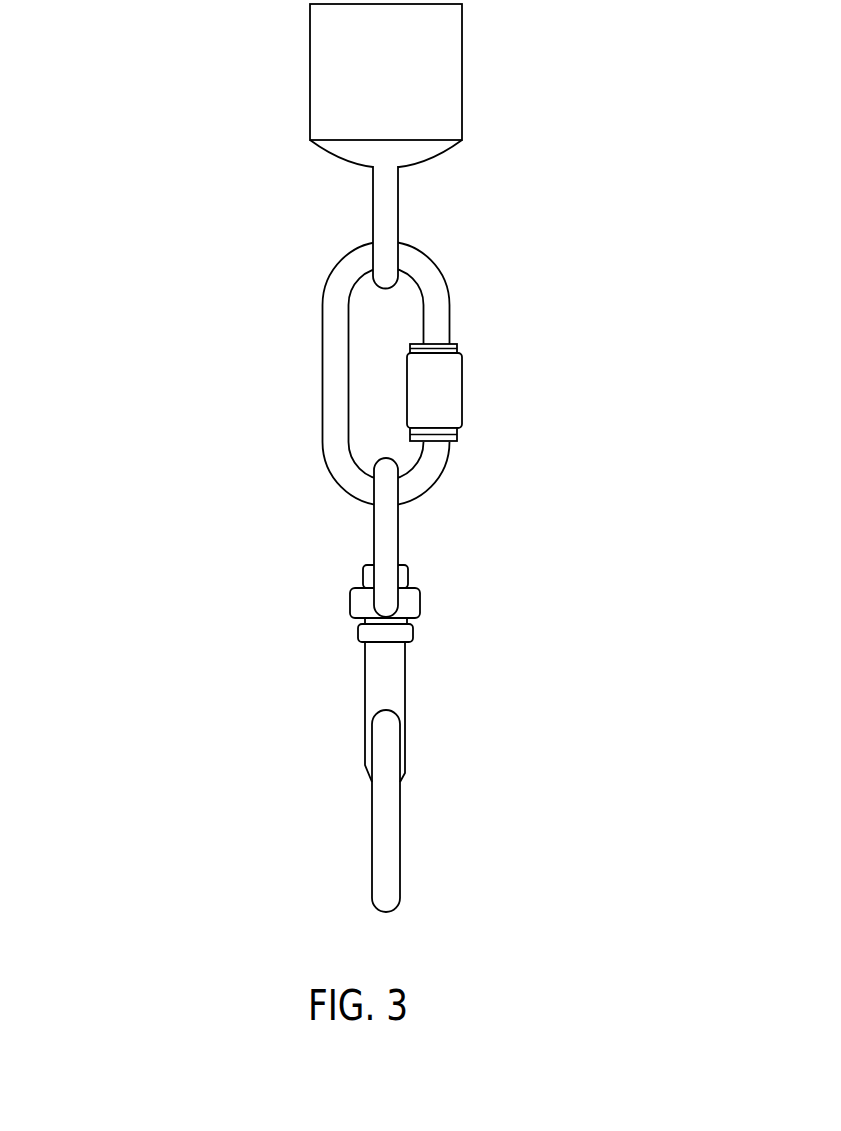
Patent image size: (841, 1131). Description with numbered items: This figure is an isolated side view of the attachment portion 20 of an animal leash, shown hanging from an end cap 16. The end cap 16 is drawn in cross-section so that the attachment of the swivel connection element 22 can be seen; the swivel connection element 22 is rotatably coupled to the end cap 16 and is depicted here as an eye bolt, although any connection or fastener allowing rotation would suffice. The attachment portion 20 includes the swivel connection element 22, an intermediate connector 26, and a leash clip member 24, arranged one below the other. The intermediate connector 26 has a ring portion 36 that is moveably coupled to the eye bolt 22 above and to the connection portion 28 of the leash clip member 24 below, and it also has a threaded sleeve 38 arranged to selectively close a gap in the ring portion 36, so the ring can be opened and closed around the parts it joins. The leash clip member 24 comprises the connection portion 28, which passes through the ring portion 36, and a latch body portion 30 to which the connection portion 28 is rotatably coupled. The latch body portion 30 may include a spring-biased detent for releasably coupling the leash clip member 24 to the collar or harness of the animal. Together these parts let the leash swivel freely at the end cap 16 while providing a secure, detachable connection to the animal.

The end cap 16 is at (445, 79).
The attachment portion 20 is at (147, 392).
The swivel connection element 22 is at (385, 217).
The leash clip member 24 is at (290, 692).
The intermediate connector 26 is at (493, 375).
The connection portion 28 is at (387, 542).
The latch body portion 30 is at (387, 778).
The ring portion 36 is at (430, 287).
The threaded sleeve 38 is at (442, 408).